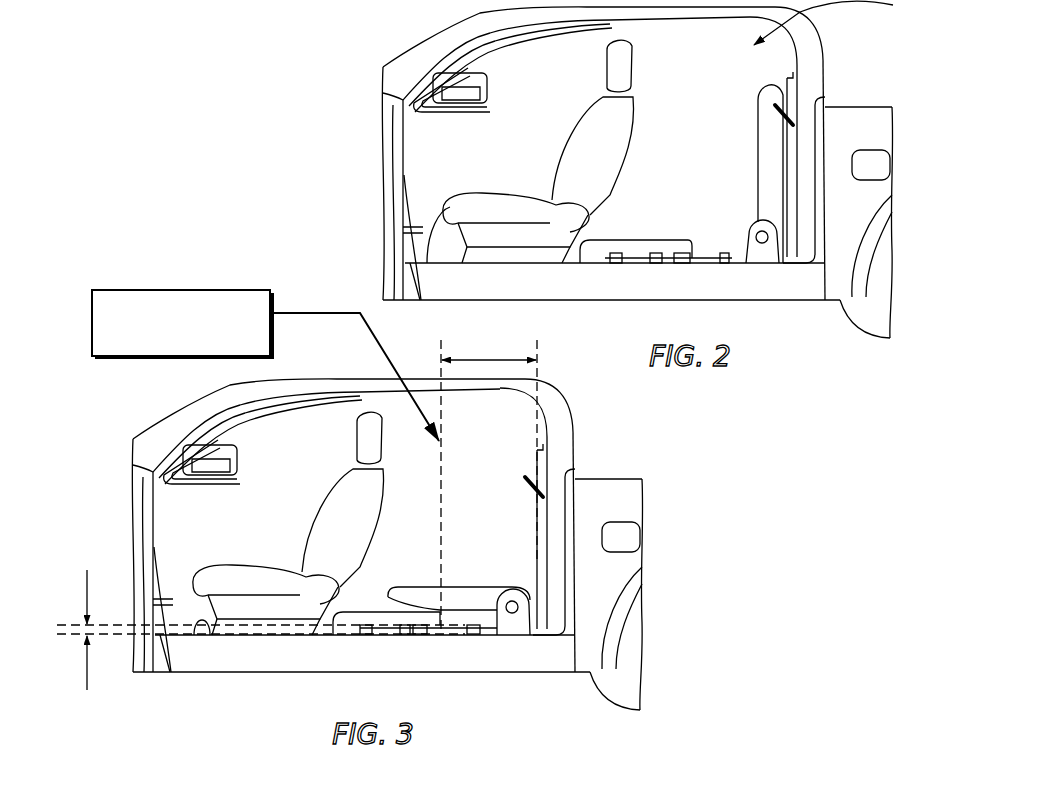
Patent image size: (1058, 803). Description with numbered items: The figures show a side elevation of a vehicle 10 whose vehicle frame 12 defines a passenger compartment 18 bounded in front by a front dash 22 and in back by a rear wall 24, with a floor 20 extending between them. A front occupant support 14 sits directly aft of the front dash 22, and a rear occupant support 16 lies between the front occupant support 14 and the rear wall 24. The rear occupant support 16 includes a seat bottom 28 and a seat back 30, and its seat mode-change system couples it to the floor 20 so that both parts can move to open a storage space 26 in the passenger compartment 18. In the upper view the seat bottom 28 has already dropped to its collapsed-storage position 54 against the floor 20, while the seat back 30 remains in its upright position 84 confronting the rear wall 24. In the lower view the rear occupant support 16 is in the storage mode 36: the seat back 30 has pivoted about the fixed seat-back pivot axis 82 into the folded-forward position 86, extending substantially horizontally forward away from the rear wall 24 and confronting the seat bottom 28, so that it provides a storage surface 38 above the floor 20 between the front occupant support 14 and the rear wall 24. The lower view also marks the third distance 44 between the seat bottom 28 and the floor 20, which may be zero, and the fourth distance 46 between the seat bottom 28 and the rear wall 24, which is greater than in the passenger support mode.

In FIG. 2, the vehicle 10 is at (337, 73).
In FIG. 3, the vehicle 10 is at (112, 498).
In FIG. 2, the vehicle frame 12 is at (453, 57).
In FIG. 3, the vehicle frame 12 is at (308, 388).
In FIG. 2, the front occupant support 14 is at (566, 149).
In FIG. 3, the front occupant support 14 is at (313, 526).
In FIG. 2, the rear occupant support 16 is at (735, 111).
In FIG. 3, the rear occupant support 16 is at (382, 578).
In FIG. 2, the passenger compartment 18 is at (838, 22).
In FIG. 3, the passenger compartment 18 is at (381, 394).
In FIG. 2, the floor 20 is at (428, 238).
In FIG. 3, the floor 20 is at (204, 642).
In FIG. 2, the front dash 22 is at (452, 125).
In FIG. 3, the front dash 22 is at (184, 501).
In FIG. 2, the rear wall 24 is at (793, 78).
In FIG. 3, the rear wall 24 is at (544, 446).
In FIG. 3, the storage space 26 is at (432, 504).
In FIG. 2, the seat bottom 28 is at (641, 239).
In FIG. 3, the seat bottom 28 is at (358, 609).
In FIG. 2, the seat back 30 is at (754, 158).
In FIG. 3, the seat back 30 is at (463, 581).
In FIG. 3, the storage mode 36 is at (92, 324).
In FIG. 3, the storage surface 38 is at (420, 585).
In FIG. 3, the third distance 44 is at (87, 672).
In FIG. 3, the fourth distance 46 is at (492, 362).
In FIG. 2, the collapsed-storage position 54 is at (606, 232).
In FIG. 3, the collapsed-storage position 54 is at (326, 618).
In FIG. 2, the fixed seat-back pivot axis 82 is at (762, 248).
In FIG. 3, the fixed seat-back pivot axis 82 is at (511, 617).
In FIG. 2, the upright position 84 is at (751, 201).
In FIG. 3, the folded-forward position 86 is at (491, 581).